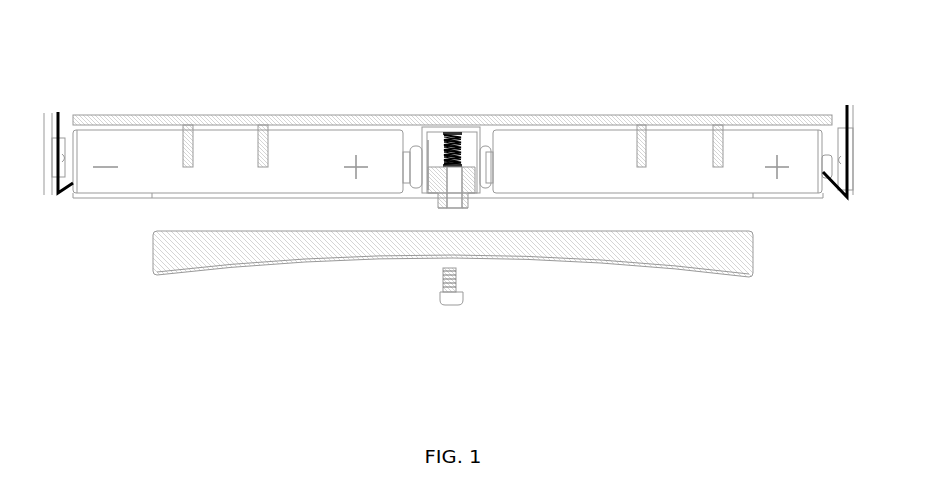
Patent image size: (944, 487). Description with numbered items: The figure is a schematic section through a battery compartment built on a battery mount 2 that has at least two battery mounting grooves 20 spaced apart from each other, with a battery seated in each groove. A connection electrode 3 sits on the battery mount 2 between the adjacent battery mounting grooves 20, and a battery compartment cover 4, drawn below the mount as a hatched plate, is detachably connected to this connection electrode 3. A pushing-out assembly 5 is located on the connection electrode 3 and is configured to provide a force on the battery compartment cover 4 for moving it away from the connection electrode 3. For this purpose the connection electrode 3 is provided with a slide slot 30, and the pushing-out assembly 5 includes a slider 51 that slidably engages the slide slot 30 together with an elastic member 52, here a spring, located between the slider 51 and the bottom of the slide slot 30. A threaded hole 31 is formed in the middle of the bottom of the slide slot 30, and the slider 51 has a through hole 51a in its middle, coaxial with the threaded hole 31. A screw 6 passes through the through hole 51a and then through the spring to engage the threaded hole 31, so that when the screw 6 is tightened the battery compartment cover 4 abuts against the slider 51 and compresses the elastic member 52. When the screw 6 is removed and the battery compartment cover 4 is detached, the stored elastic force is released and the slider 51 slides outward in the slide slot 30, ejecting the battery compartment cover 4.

The battery mount 2 is at (630, 119).
The battery mounting grooves 20 is at (246, 115).
The connection electrode 3 is at (437, 132).
The threaded hole 31 is at (450, 130).
The slide slot 30 is at (430, 157).
The elastic member 52 is at (447, 158).
The slider 51 is at (470, 173).
The through hole 51a is at (448, 193).
The pushing-out assembly 5 is at (472, 222).
The battery compartment cover 4 is at (230, 253).
The screw 6 is at (444, 298).